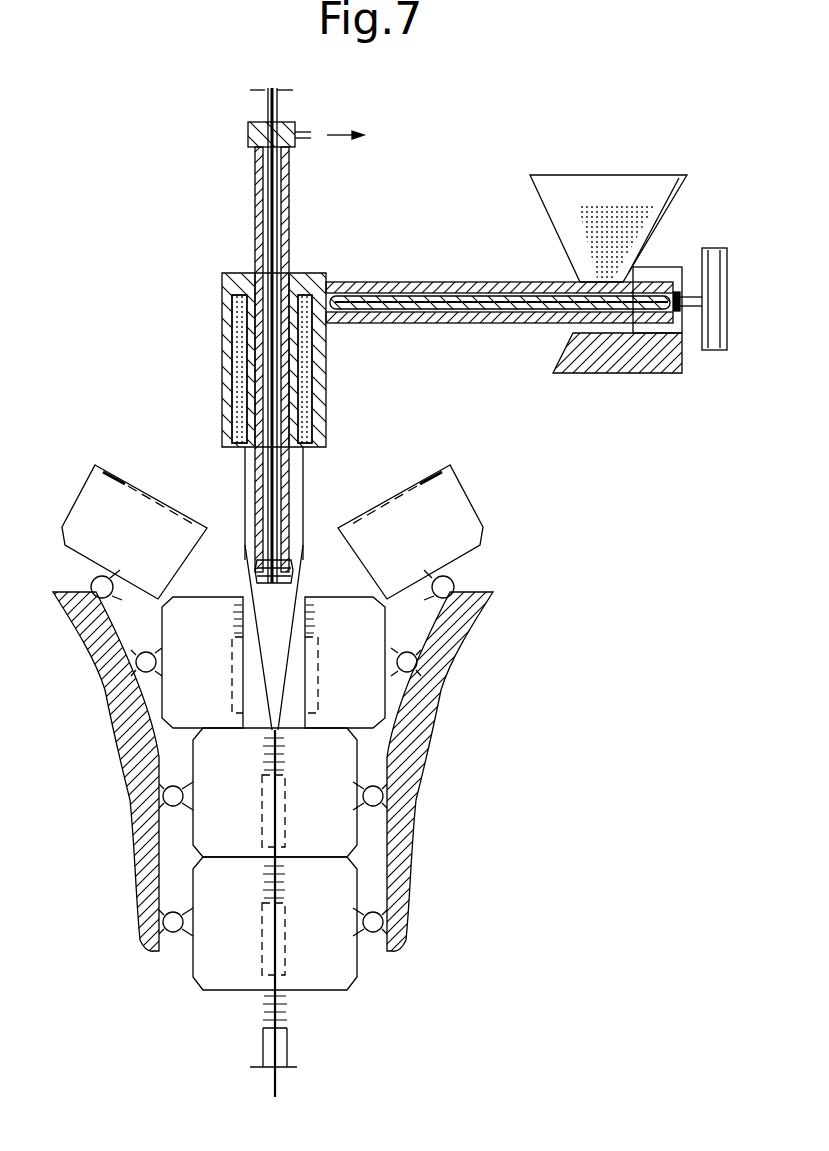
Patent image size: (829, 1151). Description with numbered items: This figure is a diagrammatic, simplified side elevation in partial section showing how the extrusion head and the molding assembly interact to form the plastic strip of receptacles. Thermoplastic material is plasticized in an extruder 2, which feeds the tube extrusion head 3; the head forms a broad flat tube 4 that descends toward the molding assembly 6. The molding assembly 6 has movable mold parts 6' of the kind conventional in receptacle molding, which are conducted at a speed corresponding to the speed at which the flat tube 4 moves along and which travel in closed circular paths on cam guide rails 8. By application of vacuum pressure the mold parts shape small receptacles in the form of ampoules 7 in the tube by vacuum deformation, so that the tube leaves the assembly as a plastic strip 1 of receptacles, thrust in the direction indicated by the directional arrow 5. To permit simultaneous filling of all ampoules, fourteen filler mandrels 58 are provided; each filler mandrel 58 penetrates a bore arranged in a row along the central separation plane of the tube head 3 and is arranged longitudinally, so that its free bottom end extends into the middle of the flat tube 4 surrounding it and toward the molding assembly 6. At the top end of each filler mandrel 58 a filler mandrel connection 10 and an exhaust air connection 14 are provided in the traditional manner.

The plastic strip 1 is at (273, 1088).
The extruder 2 is at (511, 293).
The tube extrusion head 3 is at (227, 358).
The flat tube 4 is at (245, 487).
The directional arrow 5 is at (467, 790).
The molding assembly 6 is at (382, 715).
The mold parts 6' is at (309, 700).
The ampoules 7 is at (263, 802).
The cam guide rails 8 is at (93, 625).
The filler mandrel connection 10 is at (277, 105).
The exhaust air connection 14 is at (303, 140).
The filler mandrel 58 is at (290, 527).